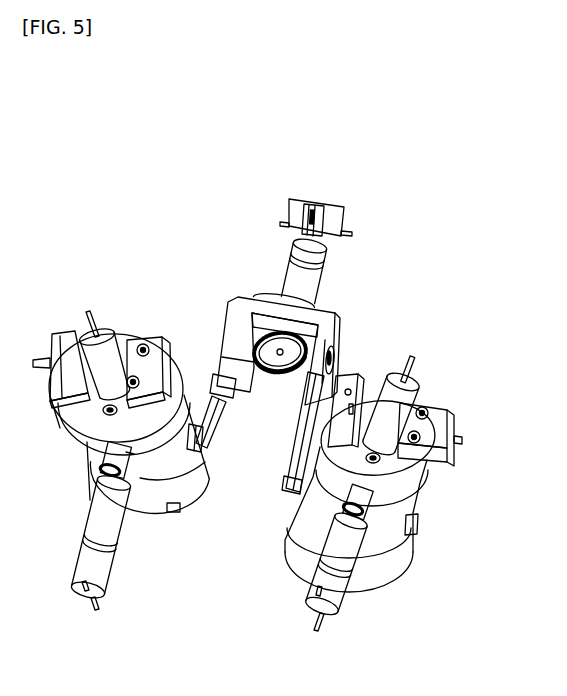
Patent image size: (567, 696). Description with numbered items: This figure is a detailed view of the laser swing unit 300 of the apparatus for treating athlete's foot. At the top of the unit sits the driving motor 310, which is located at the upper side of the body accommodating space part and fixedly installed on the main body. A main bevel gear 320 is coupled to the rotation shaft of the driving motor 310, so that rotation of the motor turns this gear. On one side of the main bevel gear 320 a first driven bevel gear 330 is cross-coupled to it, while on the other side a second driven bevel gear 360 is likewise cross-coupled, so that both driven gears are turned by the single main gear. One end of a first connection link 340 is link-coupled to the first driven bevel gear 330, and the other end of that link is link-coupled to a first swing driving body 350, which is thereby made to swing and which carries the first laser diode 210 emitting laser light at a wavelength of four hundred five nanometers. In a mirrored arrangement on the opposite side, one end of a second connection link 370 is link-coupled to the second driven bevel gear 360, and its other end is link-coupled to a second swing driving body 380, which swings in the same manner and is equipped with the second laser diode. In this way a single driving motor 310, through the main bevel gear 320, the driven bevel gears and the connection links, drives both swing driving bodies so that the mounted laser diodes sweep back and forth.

The laser swing unit 300 is at (336, 140).
The driving motor 310 is at (326, 225).
The main bevel gear 320 is at (278, 325).
The first driven bevel gear 330 is at (333, 352).
The first connection link 340 is at (290, 456).
The first swing driving body 350 is at (377, 540).
The second driven bevel gear 360 is at (245, 335).
The second connection link 370 is at (212, 428).
The second swing driving body 380 is at (140, 488).
The first laser diode 210 is at (397, 400).